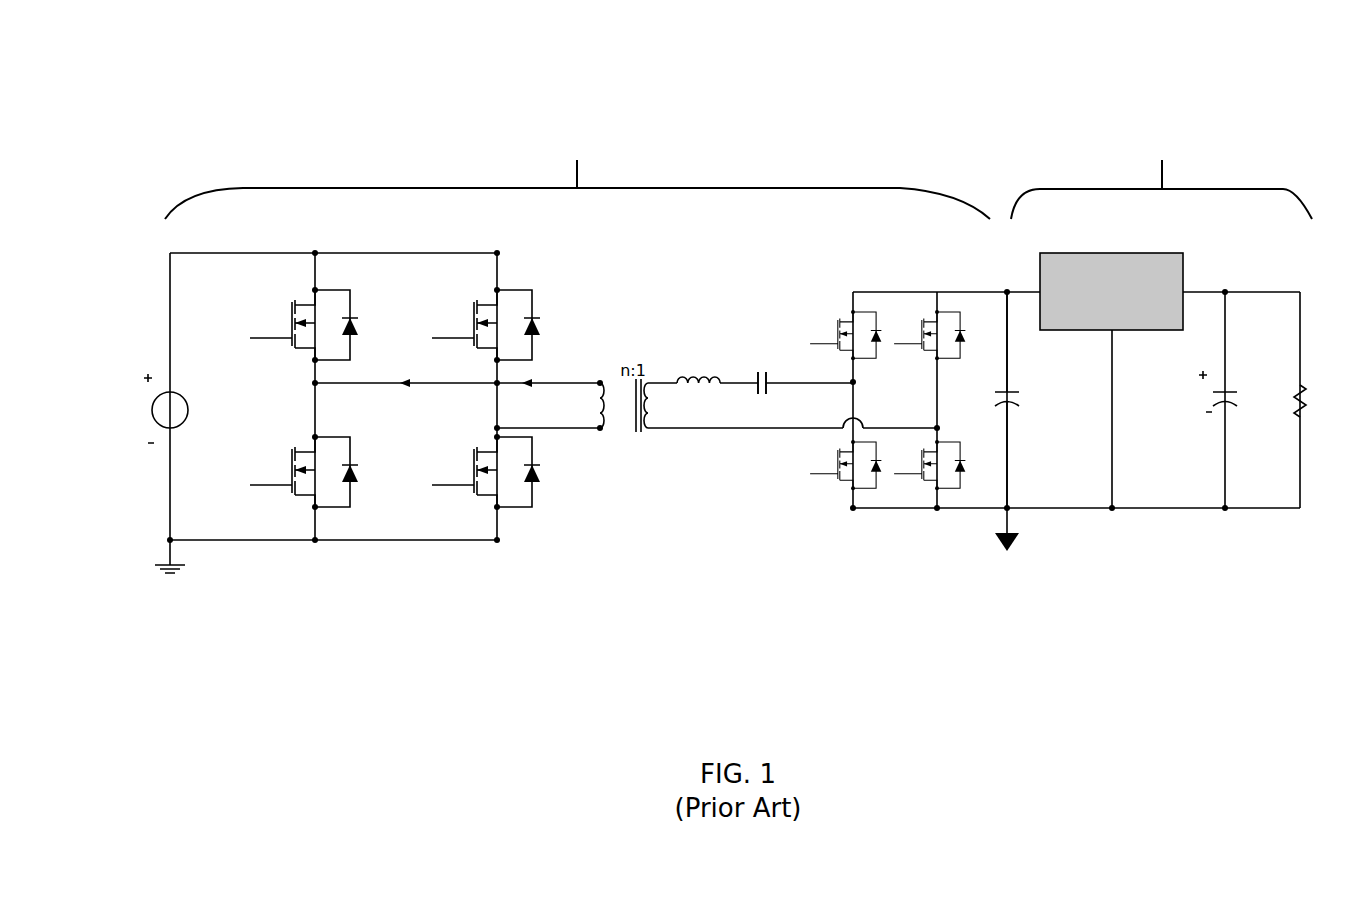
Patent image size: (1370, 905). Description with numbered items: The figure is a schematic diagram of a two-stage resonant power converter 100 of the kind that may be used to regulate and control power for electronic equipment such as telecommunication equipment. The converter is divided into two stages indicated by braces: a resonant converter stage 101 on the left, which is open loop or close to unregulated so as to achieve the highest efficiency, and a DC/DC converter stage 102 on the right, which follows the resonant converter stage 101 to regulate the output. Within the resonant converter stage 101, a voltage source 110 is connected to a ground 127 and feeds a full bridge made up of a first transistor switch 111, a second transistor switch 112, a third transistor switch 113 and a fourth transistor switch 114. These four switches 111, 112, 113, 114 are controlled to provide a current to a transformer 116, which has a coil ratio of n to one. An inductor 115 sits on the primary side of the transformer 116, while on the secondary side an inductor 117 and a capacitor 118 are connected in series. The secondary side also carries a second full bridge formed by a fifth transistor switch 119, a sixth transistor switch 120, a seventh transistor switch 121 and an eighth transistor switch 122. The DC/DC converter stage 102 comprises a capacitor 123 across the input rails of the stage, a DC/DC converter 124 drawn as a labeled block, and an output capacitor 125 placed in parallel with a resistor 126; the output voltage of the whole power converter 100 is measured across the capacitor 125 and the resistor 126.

The two-stage resonant power converter 100 is at (210, 138).
The resonant converter stage 101 is at (577, 160).
The DC/DC converter stage 102 is at (1161, 160).
The voltage source 110 is at (150, 407).
The first transistor switch 111 is at (295, 292).
The second transistor switch 112 is at (292, 505).
The third transistor switch 113 is at (471, 292).
The fourth transistor switch 114 is at (475, 495).
The inductor 115 is at (600, 438).
The transformer 116 is at (640, 355).
The inductor 117 is at (703, 355).
The capacitor 118 is at (765, 345).
The fifth transistor switch 119 is at (836, 312).
The sixth transistor switch 120 is at (828, 490).
The seventh transistor switch 121 is at (917, 317).
The eighth transistor switch 122 is at (918, 478).
The capacitor 123 is at (1013, 403).
The DC/DC converter 124 is at (1087, 253).
The capacitor 125 is at (1195, 405).
The resistor 126 is at (1310, 415).
The ground 127 is at (168, 541).